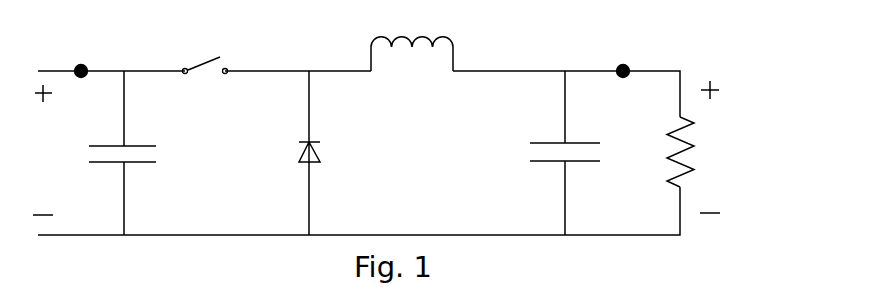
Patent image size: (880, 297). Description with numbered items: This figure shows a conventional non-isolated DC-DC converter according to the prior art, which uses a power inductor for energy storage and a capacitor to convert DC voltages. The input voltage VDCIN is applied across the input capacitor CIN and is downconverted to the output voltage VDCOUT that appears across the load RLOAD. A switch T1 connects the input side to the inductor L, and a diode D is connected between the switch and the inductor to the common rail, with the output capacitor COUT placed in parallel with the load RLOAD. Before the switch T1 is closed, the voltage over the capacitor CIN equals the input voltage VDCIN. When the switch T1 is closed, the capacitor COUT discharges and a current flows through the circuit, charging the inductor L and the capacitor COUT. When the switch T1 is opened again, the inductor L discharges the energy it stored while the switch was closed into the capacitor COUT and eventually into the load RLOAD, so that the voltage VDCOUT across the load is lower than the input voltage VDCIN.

The switch T1 is at (205, 55).
The inductor L is at (412, 43).
The diode D is at (320, 153).
The capacitor CIN is at (116, 153).
The capacitor COUT is at (553, 153).
The load RLOAD is at (657, 152).
The input voltage VDCIN is at (35, 150).
The output voltage VDCOUT is at (731, 147).